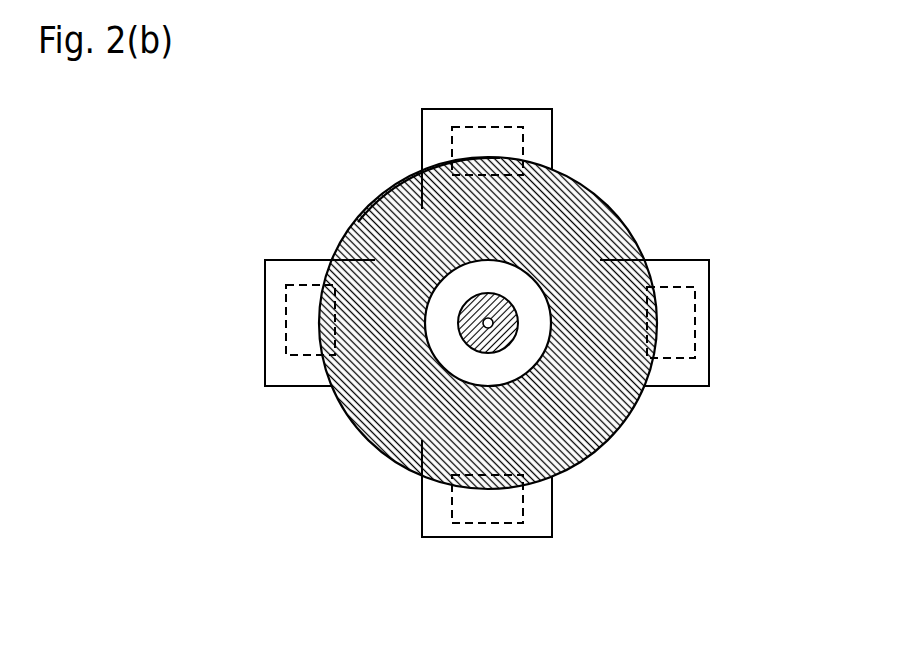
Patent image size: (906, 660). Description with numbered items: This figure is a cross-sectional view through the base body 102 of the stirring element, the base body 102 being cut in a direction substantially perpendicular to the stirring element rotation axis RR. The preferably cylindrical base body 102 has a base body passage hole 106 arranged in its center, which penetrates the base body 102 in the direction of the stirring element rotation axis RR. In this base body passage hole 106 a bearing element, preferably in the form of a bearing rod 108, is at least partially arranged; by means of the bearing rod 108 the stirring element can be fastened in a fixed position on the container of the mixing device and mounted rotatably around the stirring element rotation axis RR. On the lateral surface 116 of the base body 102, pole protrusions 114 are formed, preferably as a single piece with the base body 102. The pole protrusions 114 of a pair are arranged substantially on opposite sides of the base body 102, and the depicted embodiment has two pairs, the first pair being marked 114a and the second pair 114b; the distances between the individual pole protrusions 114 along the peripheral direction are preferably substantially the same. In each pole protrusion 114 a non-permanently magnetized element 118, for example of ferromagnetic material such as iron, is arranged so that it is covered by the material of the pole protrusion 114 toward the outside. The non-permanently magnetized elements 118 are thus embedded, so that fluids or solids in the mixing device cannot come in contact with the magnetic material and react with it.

The base body 102 is at (591, 418).
The base body passage hole 106 is at (446, 351).
The bearing rod 108 is at (500, 337).
The pole protrusions 114 is at (538, 120).
The first pair of pole protrusions 114a is at (278, 275).
The second pair of pole protrusions 114b is at (446, 120).
The lateral surface 116 is at (358, 222).
The non-permanently magnetized element 118 is at (483, 136).
The stirring element rotation axis RR is at (492, 320).